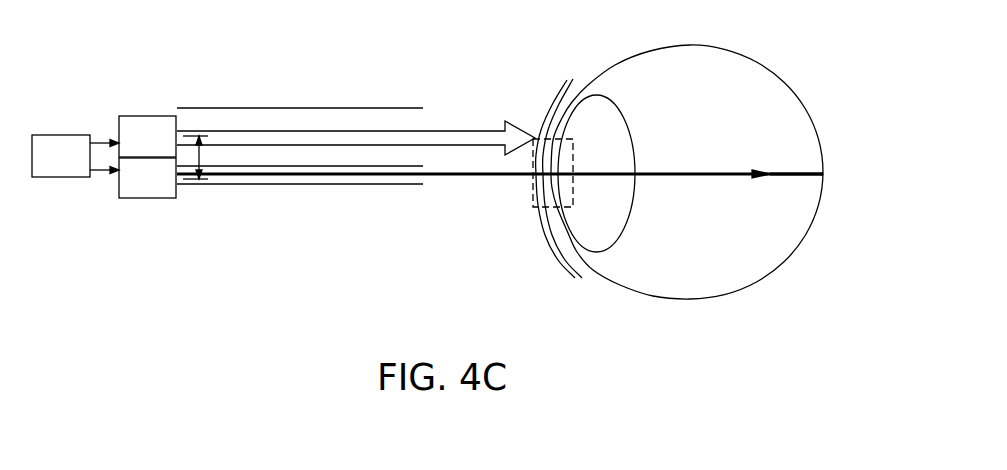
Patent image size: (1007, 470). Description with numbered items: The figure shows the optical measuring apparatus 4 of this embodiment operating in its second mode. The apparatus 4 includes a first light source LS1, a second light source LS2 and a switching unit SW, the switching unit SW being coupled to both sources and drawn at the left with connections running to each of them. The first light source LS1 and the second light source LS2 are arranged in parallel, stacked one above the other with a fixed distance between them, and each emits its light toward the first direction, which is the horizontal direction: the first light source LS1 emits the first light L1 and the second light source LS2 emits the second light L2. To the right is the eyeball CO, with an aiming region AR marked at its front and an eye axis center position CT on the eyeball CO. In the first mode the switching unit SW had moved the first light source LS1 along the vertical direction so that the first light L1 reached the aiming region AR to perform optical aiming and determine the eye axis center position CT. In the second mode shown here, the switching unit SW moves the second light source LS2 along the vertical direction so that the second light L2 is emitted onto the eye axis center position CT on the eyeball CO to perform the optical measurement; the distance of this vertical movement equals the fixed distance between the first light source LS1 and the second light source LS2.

The optical measuring apparatus 4 is at (155, 43).
The switching unit SW is at (75, 170).
The first light source LS1 is at (167, 148).
The second light source LS2 is at (167, 191).
The first light L1 is at (471, 137).
The second light L2 is at (462, 177).
The aiming region AR is at (537, 138).
The eyeball CO is at (655, 57).
The eye axis center position CT is at (808, 174).